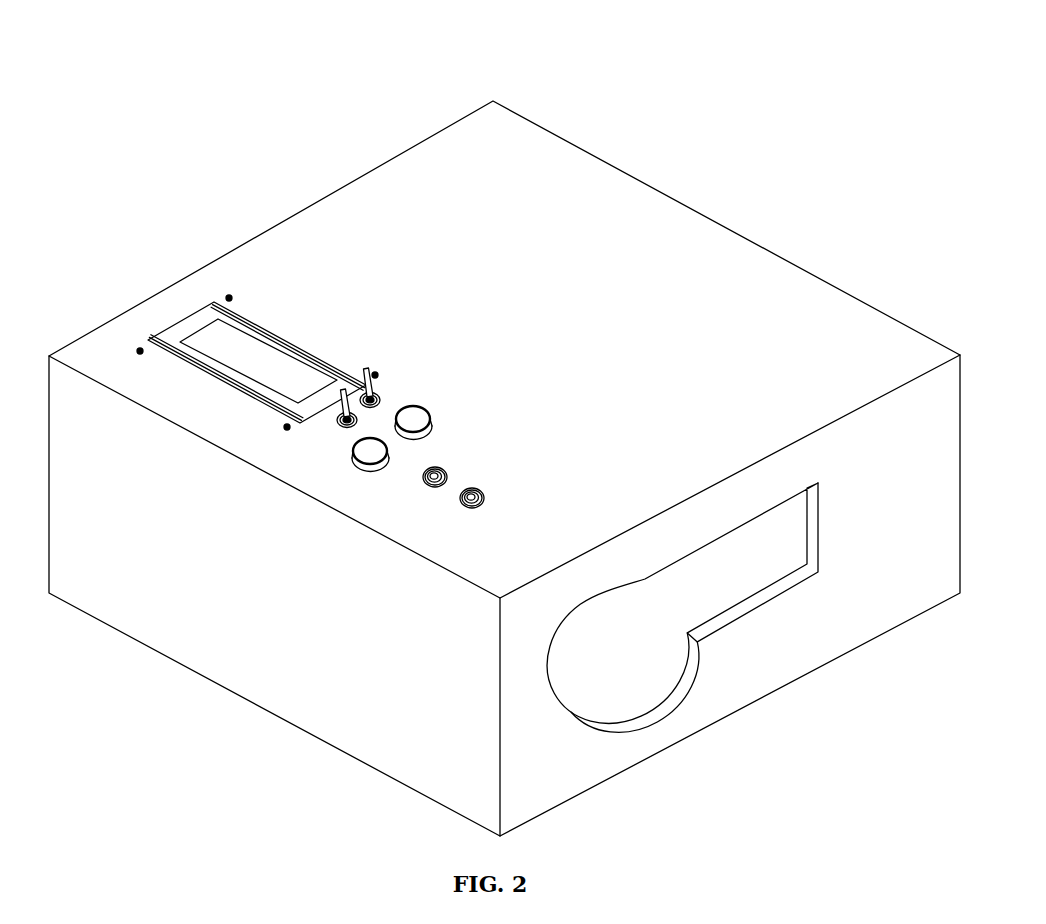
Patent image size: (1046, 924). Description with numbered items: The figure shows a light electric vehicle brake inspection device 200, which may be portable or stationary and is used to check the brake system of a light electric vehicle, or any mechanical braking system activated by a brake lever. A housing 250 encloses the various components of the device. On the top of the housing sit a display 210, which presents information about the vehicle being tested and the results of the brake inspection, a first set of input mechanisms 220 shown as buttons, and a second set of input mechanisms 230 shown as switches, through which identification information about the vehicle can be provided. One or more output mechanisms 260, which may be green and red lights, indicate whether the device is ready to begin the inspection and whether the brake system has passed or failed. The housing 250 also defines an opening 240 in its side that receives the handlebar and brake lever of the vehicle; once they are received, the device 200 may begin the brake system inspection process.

The light electric vehicle brake inspection device 200 is at (431, 71).
The housing 250 is at (110, 320).
The display 210 is at (237, 391).
The second set of input mechanisms 230 is at (368, 368).
The first set of input mechanisms 220 is at (433, 417).
The output mechanisms 260 is at (486, 504).
The opening 240 is at (819, 527).